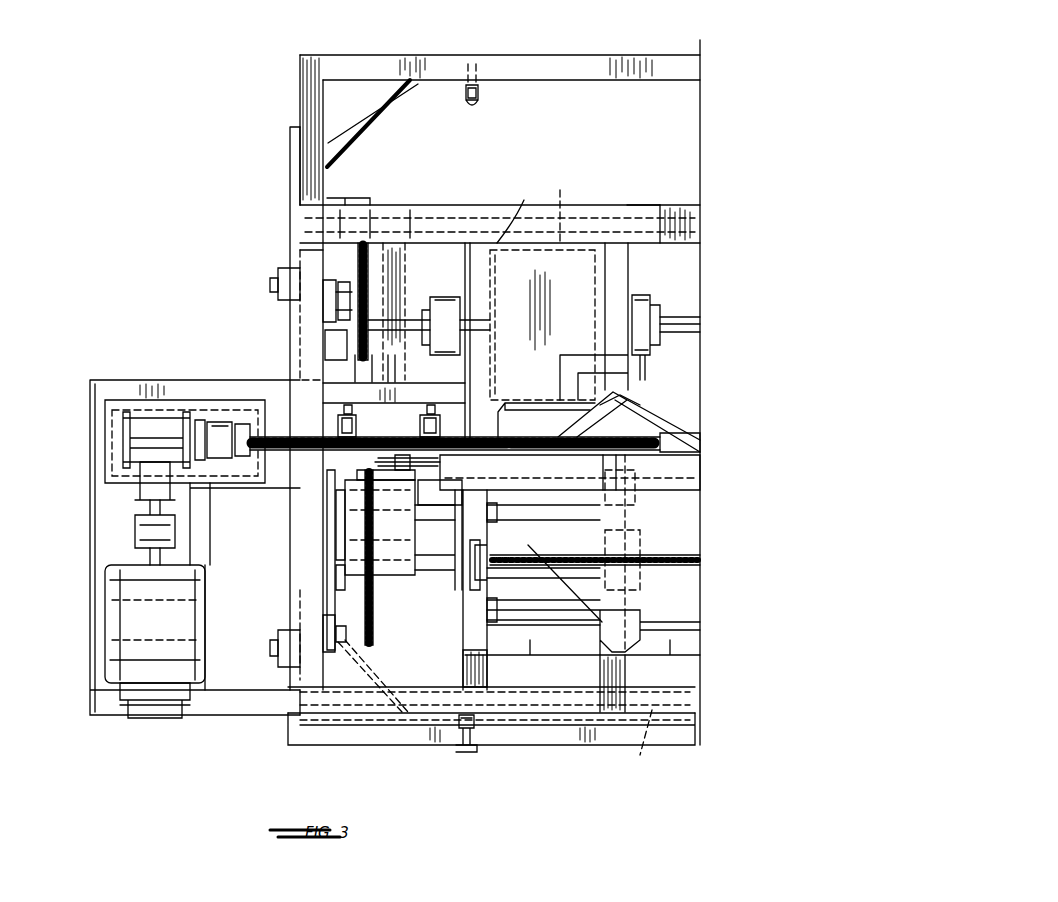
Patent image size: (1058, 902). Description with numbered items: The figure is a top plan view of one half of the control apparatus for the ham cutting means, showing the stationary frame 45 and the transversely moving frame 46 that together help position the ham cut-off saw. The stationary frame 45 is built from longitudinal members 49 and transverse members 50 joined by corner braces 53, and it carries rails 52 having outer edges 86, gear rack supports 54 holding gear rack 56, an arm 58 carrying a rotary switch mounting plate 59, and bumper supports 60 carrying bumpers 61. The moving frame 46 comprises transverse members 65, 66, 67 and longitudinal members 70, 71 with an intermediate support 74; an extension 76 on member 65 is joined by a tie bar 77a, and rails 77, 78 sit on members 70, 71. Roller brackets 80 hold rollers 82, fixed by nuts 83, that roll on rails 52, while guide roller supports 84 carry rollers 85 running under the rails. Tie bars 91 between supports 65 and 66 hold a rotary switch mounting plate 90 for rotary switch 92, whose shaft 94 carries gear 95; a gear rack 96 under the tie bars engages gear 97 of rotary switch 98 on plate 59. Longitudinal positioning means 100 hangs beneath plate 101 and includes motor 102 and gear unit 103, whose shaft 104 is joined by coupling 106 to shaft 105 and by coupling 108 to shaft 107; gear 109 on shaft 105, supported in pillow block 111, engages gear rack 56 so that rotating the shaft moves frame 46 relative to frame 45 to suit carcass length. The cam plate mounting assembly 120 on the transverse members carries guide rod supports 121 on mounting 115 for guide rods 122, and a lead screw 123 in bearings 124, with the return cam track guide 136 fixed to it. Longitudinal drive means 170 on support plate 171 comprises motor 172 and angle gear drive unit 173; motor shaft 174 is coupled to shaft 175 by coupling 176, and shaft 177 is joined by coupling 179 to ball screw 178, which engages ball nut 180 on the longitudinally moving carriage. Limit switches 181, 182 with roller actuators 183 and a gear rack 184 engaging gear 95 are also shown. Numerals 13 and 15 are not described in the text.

The shelf plate 13 is at (410, 393).
The coupling 15 is at (218, 420).
The stationary frame 45 is at (659, 52).
The transversely moving frame 46 is at (610, 199).
The longitudinal members 49 is at (300, 96).
The transverse members 50 is at (432, 52).
The rails 52 is at (290, 146).
The corner braces 53 is at (366, 118).
The gear rack supports 54 is at (345, 200).
The gear rack 56 is at (370, 258).
The arm 58 is at (340, 530).
The rotary switch mounting plate 59 is at (425, 570).
The bumper supports 60 is at (462, 86).
The bumpers 61 is at (480, 94).
The transverse member 65 is at (336, 578).
The transverse member 66 is at (463, 672).
The transverse member 67 is at (603, 672).
The longitudinal member 70 is at (668, 205).
The longitudinal member 71 is at (637, 745).
The support 74 is at (400, 282).
The extension 76 is at (235, 716).
The rail 77 is at (633, 204).
The tie bar 77a is at (92, 478).
The rail 78 is at (574, 745).
The roller brackets 80 is at (322, 290).
The rollers 82 is at (296, 326).
The nuts 83 is at (345, 282).
The guide roller supports 84 is at (280, 272).
The rollers 85 is at (270, 284).
The outer edges 86 is at (290, 174).
The rotary switch mounting plate 90 is at (408, 576).
The tie bars 91 is at (336, 518).
The rotary switch 92 is at (357, 488).
The shaft 94 is at (395, 462).
The gear 95 is at (398, 436).
The gear rack 96 is at (374, 622).
The gear 97 is at (327, 588).
The rotary switch 98 is at (462, 545).
The longitudinal positioning means 100 is at (558, 209).
The plate 101 is at (513, 212).
The motor 102 is at (556, 428).
The gear unit 103 is at (540, 372).
The shaft 104 is at (497, 300).
The shaft 105 is at (420, 332).
The coupling 106 is at (444, 298).
The shaft 107 is at (680, 333).
The coupling 108 is at (655, 305).
The gear 109 is at (369, 368).
The pillow block 111 is at (402, 368).
The mounting 115 is at (520, 592).
The cam plate mounting assembly 120 is at (695, 660).
The guide rod supports 121 is at (490, 522).
The guide rods 122 is at (490, 520).
The lead screw 123 is at (700, 556).
The bearings 124 is at (482, 578).
The return cam track guide 136 is at (688, 478).
The longitudinal drive means 170 is at (96, 606).
The support plate 171 is at (190, 504).
The motor 172 is at (122, 688).
The angle gear drive unit 173 is at (126, 436).
The shaft 174 is at (162, 558).
The shaft 175 is at (170, 520).
The coupling 176 is at (170, 535).
The shaft 177 is at (199, 418).
The ball screw 178 is at (276, 470).
The coupling 179 is at (243, 422).
The ball nut 180 is at (688, 433).
The limit switch 181 is at (356, 424).
The limit switch 182 is at (440, 424).
The roller actuators 183 is at (354, 402).
The gear rack 184 is at (422, 469).